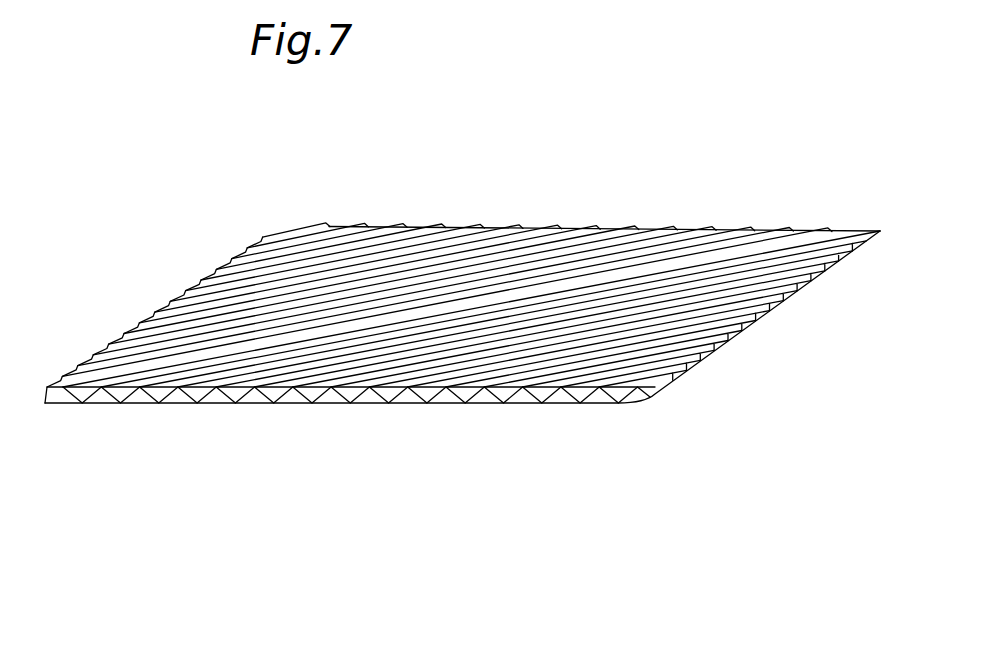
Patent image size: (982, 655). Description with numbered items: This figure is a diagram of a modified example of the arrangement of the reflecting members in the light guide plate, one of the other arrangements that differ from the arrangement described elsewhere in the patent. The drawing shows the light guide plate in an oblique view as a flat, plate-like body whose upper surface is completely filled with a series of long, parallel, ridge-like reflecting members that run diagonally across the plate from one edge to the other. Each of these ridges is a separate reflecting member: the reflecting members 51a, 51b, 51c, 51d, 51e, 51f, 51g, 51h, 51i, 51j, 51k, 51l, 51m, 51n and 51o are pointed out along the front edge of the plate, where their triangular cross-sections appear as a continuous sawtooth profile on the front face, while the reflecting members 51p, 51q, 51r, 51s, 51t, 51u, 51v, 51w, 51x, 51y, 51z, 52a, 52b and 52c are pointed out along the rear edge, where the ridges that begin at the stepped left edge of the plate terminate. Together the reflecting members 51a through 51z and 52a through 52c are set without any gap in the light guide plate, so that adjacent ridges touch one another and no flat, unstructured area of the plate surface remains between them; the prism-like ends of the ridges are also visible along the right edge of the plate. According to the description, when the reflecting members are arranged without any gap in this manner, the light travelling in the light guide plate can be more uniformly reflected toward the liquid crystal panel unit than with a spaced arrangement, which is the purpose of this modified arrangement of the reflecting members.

The reflecting member 51a is at (63, 406).
The reflecting member 51b is at (101, 406).
The reflecting member 51c is at (140, 406).
The reflecting member 51d is at (178, 406).
The reflecting member 51e is at (216, 406).
The reflecting member 51f is at (254, 406).
The reflecting member 51g is at (293, 406).
The reflecting member 51h is at (331, 406).
The reflecting member 51i is at (369, 406).
The reflecting member 51j is at (408, 406).
The reflecting member 51k is at (446, 406).
The reflecting member 51l is at (484, 406).
The reflecting member 51m is at (523, 406).
The reflecting member 51n is at (561, 406).
The reflecting member 51o is at (599, 406).
The reflecting member 51p is at (327, 224).
The reflecting member 51q is at (365, 224).
The reflecting member 51r is at (404, 224).
The reflecting member 51s is at (443, 224).
The reflecting member 51t is at (481, 224).
The reflecting member 51u is at (520, 224).
The reflecting member 51v is at (559, 224).
The reflecting member 51w is at (597, 224).
The reflecting member 51x is at (636, 224).
The reflecting member 51y is at (674, 224).
The reflecting member 51z is at (713, 224).
The reflecting member 52a is at (752, 224).
The reflecting member 52b is at (790, 224).
The reflecting member 52c is at (829, 224).